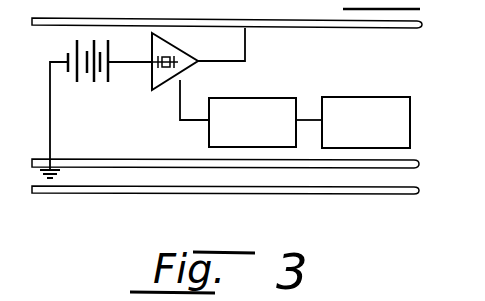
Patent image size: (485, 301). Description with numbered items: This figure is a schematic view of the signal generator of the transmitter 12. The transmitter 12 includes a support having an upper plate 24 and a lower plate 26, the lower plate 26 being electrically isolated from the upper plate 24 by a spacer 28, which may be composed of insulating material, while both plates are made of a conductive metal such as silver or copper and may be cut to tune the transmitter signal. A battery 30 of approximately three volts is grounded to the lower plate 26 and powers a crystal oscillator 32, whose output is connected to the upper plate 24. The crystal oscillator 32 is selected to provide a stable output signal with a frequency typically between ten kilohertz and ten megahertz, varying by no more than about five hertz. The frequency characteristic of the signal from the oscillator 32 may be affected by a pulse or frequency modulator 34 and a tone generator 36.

The transmitter 12 is at (421, 49).
The upper plate 24 is at (227, 14).
The lower plate 26 is at (420, 192).
The spacer 28 is at (420, 163).
The battery 30 is at (85, 86).
The crystal oscillator 32 is at (182, 53).
The pulse or frequency modulator 34 is at (274, 98).
The tone generator 36 is at (388, 97).